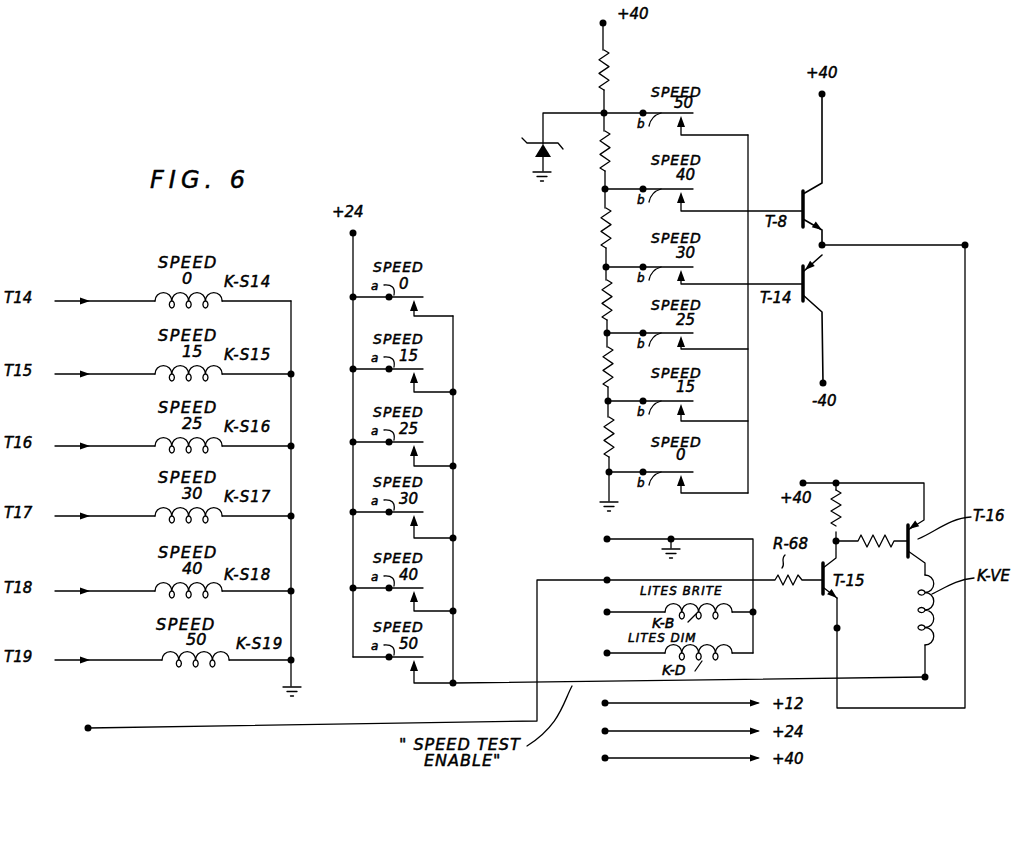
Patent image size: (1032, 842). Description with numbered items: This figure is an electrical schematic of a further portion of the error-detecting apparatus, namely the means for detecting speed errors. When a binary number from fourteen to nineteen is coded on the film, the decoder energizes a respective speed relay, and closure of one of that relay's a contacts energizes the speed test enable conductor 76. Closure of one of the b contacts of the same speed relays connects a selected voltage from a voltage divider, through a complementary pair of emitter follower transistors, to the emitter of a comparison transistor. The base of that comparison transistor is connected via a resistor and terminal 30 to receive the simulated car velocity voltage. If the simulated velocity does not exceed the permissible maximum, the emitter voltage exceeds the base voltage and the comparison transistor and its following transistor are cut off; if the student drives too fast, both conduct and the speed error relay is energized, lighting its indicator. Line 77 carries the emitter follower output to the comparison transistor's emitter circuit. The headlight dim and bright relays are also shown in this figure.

The terminal 30 is at (88, 727).
The speed test enable conductor 76 is at (487, 682).
The output line of speed detector 77 is at (966, 243).